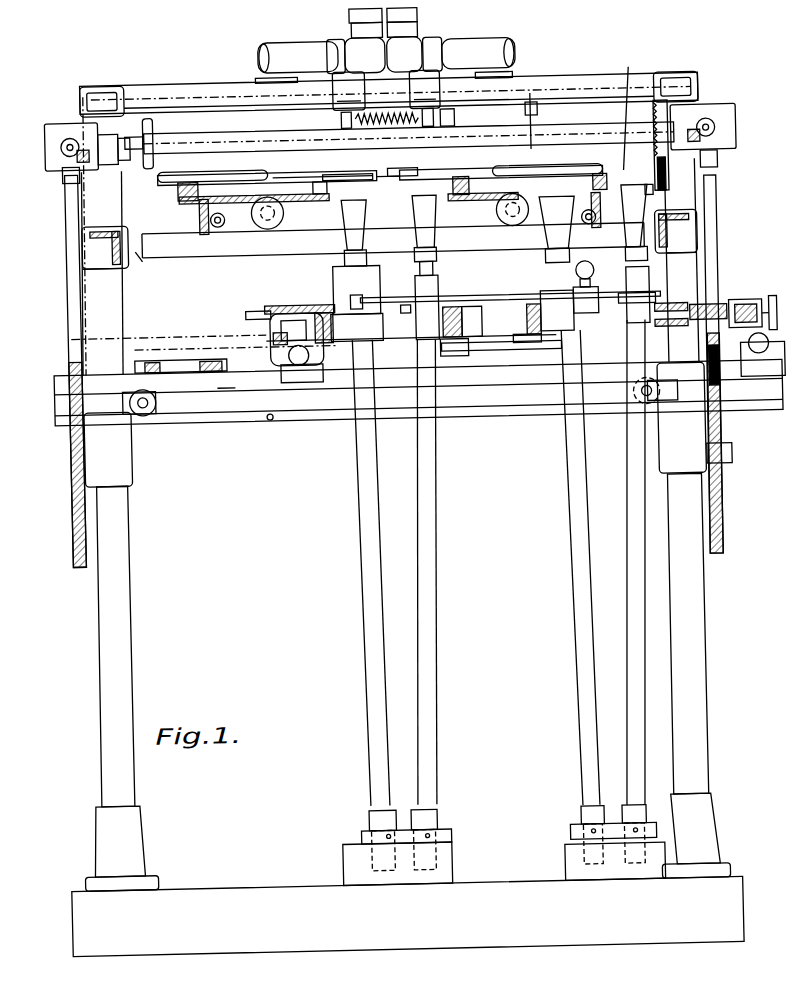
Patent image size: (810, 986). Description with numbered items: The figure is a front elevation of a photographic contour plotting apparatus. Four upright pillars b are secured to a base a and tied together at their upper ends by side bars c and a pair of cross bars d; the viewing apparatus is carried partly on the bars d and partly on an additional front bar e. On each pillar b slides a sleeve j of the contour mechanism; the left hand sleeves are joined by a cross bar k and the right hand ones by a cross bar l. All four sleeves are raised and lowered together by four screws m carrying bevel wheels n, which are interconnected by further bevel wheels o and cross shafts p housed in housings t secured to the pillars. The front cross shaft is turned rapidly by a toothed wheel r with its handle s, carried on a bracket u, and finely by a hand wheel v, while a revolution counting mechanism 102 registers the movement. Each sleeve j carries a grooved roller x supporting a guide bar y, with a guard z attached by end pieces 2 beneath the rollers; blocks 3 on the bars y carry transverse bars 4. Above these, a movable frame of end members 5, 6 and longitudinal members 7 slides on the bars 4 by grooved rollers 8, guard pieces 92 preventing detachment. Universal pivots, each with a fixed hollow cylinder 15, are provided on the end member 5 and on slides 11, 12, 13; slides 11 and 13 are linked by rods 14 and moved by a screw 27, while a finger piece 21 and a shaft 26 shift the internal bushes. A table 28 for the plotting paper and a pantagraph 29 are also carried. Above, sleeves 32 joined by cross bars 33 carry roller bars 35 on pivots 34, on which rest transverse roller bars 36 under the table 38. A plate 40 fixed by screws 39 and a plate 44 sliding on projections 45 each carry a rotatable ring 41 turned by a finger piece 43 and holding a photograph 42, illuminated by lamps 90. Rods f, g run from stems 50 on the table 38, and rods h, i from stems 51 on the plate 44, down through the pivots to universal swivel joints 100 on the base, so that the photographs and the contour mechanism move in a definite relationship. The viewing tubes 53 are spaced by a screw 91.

The base a is at (223, 890).
The upright pillars b is at (123, 614).
The side bars c is at (89, 82).
The cross bars d is at (185, 80).
The front bar e is at (217, 92).
The cross shafts p is at (213, 133).
The hand wheel v is at (141, 160).
The housings t is at (54, 125).
The bevel wheels o is at (84, 130).
The bevel wheels n is at (63, 143).
The transverse bars 4 is at (67, 162).
The screws m is at (77, 193).
The handle s is at (628, 108).
The toothed wheel r is at (669, 107).
The bracket u is at (671, 146).
The tubes 53 is at (300, 52).
The screw 91 is at (350, 119).
The revolution counting mechanism 102 is at (549, 120).
The cross bars 33 is at (96, 228).
The sleeves 32 is at (390, 279).
The end member 5 is at (65, 268).
The pivots 34 is at (141, 246).
The roller bars 35 is at (194, 250).
The transverse roller bars 36 is at (406, 235).
The table 38 is at (206, 207).
The screws 39 is at (190, 186).
The finger piece 43 is at (232, 172).
The photograph 42 is at (380, 163).
The rotatable ring 41 is at (318, 172).
The plate 40 is at (358, 175).
The plate 44 is at (398, 172).
The projections 45 is at (466, 178).
The stem 50 is at (368, 230).
The stems 51 is at (436, 238).
The lamps 90 is at (280, 224).
The hollow cylinder 15 is at (354, 300).
The slide 11 is at (452, 310).
The shaft 26 is at (491, 297).
The pantagraph 29 is at (272, 313).
The blocks 3 is at (312, 381).
The longitudinal members 7 is at (404, 328).
The slide 12 is at (538, 347).
The rods 14 is at (503, 354).
The finger piece 21 is at (595, 282).
The slide 13 is at (653, 295).
The screw 27 is at (719, 315).
The end member 6 is at (749, 312).
The end pieces 2 is at (62, 396).
The guard pieces 92 is at (275, 341).
The cross bar l is at (733, 462).
The roller x is at (151, 409).
The sleeve j is at (134, 477).
The grooved rollers 8 is at (250, 314).
The cross bar k is at (212, 357).
The table 28 is at (148, 355).
The guide bar y is at (228, 388).
The guard z is at (270, 418).
The rod i is at (626, 589).
The rod g is at (575, 636).
The rod h is at (433, 606).
The rod f is at (363, 598).
The universal swivel joint 100 is at (366, 818).